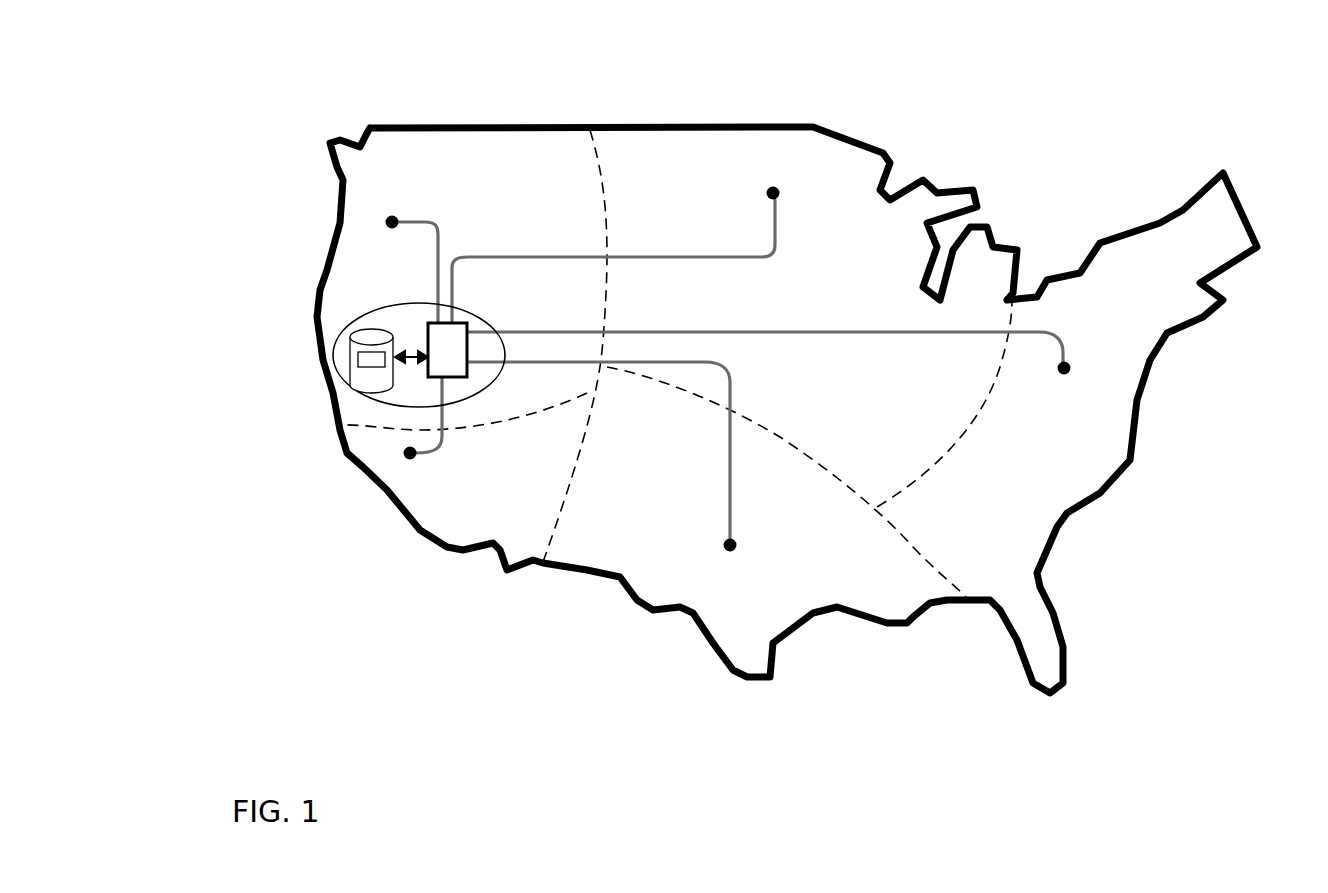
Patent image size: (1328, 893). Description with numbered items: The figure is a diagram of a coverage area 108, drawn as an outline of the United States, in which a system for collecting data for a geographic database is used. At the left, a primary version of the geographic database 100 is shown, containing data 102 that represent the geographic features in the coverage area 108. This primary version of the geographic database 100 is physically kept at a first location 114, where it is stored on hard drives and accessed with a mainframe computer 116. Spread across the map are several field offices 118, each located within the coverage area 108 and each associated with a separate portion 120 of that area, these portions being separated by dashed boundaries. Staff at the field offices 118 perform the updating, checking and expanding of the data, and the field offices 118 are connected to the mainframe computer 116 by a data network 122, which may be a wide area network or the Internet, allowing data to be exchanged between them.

The primary version of the geographic database 100 is at (348, 354).
The data 102 is at (367, 372).
The coverage area 108 is at (884, 143).
The first location 114 is at (378, 428).
The mainframe computer 116 is at (426, 322).
The field office 118 is at (380, 222).
The portion of the coverage area 120 is at (486, 171).
The data network 122 is at (537, 243).